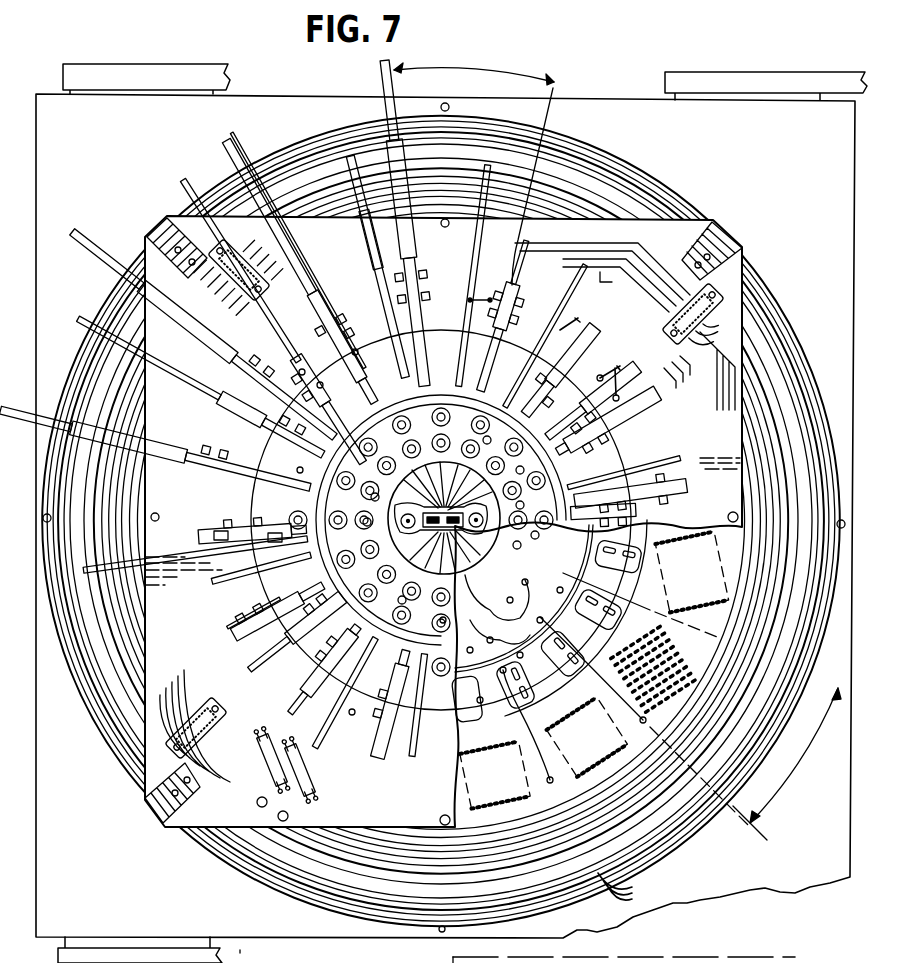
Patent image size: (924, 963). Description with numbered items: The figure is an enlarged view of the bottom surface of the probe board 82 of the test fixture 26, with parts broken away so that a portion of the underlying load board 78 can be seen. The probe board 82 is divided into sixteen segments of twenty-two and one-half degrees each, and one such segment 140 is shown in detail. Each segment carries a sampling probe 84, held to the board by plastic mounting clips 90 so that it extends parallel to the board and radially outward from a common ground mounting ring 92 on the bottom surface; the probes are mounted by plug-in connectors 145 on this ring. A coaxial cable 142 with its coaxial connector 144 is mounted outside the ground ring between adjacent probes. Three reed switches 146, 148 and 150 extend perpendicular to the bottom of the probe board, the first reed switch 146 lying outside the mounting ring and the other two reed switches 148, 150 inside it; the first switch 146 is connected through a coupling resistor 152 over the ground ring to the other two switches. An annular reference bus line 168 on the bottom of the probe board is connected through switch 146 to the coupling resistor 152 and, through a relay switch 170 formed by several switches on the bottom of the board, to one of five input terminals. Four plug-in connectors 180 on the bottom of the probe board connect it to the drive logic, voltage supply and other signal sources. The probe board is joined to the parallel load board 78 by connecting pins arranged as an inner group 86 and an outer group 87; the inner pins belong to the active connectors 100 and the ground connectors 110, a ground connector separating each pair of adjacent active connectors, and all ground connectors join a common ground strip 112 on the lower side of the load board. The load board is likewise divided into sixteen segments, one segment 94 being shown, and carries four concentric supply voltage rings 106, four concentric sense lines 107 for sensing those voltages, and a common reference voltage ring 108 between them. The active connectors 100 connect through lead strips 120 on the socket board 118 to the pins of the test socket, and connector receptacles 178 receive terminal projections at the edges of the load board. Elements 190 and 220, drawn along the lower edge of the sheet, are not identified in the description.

The test fixture 26 is at (578, 88).
The load board 78 is at (275, 100).
The probe board 82 is at (695, 245).
The sampling probe 84 is at (500, 318).
The inner group of connecting pins 86 is at (478, 470).
The outer group of connecting pins 87 is at (548, 345).
The mounting clip 90 is at (230, 536).
The common ground mounting ring 92 is at (285, 536).
The load board segment 94 is at (797, 772).
The active connector 100 is at (395, 565).
The supply voltage conductor rings 106 is at (607, 822).
The sense lines 107 is at (631, 888).
The common reference voltage ring 108 is at (513, 876).
The ground connector 110 is at (395, 537).
The common ground strip 112 is at (532, 509).
The socket board 118 is at (511, 458).
The lead strip 120 is at (405, 598).
The probe board segment 140 is at (474, 62).
The coaxial cable 142 is at (472, 234).
The coaxial connector 144 is at (500, 380).
The plug-in connector 145 is at (310, 470).
The first reed switch 146 is at (364, 522).
The reed switch 148 is at (318, 400).
The reed switch 150 is at (372, 498).
The coupling resistor 152 is at (502, 439).
The reference bus line 168 is at (382, 324).
The relay switch 170 is at (285, 778).
The connector receptacle 178 is at (153, 72).
The plug-in connector 180 is at (240, 296).
The support bar 190 is at (258, 956).
The support bar 220 is at (424, 960).